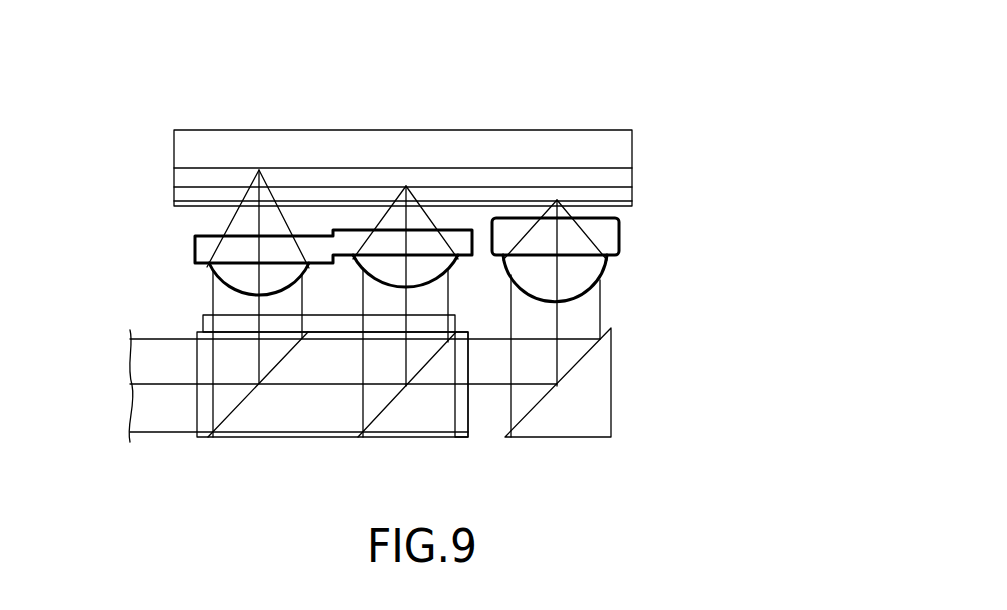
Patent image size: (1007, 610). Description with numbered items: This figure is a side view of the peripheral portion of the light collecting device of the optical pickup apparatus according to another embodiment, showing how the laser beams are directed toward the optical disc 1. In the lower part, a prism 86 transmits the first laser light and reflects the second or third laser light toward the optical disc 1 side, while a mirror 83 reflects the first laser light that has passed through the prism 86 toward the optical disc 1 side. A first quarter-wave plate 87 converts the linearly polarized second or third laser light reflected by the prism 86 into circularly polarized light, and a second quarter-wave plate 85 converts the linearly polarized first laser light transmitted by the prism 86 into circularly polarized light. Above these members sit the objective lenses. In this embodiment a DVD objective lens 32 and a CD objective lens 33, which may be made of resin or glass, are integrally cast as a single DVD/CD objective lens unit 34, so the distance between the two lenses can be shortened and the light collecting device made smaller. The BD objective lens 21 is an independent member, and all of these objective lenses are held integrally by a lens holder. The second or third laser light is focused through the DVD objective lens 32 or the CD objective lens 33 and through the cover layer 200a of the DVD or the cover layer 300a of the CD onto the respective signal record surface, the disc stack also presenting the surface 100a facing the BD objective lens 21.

The optical disc 1 is at (419, 126).
The cover layer of the CD 300a is at (632, 168).
The cover layer of the DVD 200a is at (632, 188).
The surface of substrate 100 100a is at (632, 207).
The DVD/CD objective lens unit 34 is at (314, 226).
The CD objective lens 33 is at (234, 281).
The DVD objective lens 32 is at (378, 268).
The BD objective lens 21 is at (615, 238).
The first λ/4 plate 87 is at (442, 325).
The prism 86 is at (278, 420).
The second λ/4 plate 85 is at (462, 423).
The mirror 83 is at (570, 422).